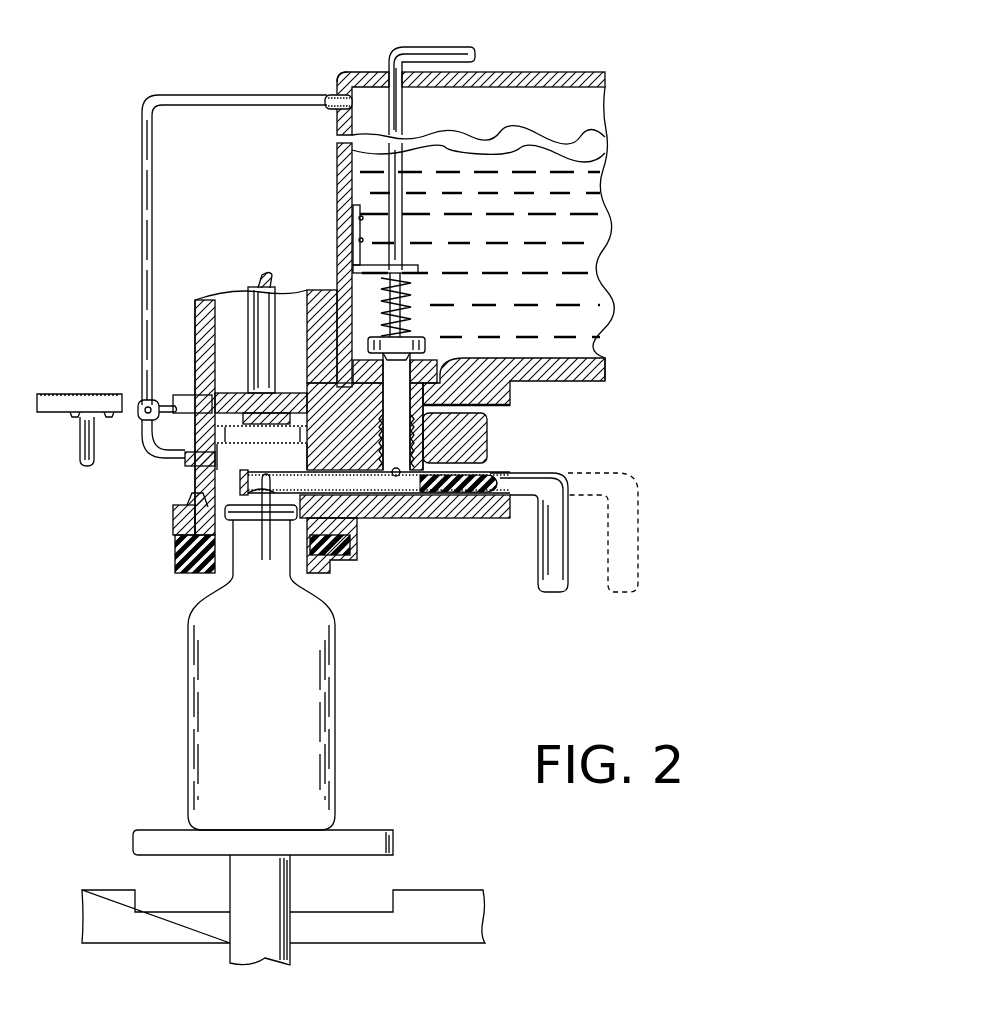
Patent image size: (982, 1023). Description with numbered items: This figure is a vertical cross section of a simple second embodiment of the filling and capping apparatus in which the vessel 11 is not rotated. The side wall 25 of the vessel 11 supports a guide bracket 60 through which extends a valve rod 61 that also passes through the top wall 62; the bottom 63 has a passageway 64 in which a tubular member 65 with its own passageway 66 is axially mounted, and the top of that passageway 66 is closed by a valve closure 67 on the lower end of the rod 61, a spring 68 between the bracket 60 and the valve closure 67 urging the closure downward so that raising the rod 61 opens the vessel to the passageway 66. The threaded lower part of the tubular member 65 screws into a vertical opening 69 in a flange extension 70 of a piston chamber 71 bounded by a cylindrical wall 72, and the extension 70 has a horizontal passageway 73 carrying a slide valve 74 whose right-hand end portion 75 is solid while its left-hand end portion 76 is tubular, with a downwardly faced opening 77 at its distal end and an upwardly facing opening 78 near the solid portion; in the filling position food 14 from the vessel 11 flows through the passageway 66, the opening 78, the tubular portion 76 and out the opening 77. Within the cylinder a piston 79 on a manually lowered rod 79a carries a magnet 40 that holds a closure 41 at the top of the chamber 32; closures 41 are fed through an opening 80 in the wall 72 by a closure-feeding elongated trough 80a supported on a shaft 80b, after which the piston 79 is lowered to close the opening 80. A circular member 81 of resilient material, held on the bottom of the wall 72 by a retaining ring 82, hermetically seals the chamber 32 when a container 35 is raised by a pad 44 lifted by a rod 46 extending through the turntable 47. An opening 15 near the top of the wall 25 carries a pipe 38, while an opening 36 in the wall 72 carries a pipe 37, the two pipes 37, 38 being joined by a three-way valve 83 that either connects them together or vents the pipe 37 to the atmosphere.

The vessel 11 is at (342, 68).
The food 14 is at (465, 142).
The opening 15 is at (350, 102).
The wall 25 is at (337, 178).
The chamber 32 is at (262, 457).
The container 35 is at (335, 680).
The opening 36 is at (215, 470).
The pipe 37 is at (148, 445).
The pipe 38 is at (158, 158).
The magnet 40 is at (280, 393).
The closure 41 is at (226, 448).
The pad 44 is at (355, 830).
The rod 46 is at (290, 905).
The turntable 47 is at (430, 890).
The guide bracket 60 is at (418, 266).
The valve rod 61 is at (404, 46).
The top wall 62 is at (505, 72).
The bottom 63 is at (524, 383).
The passageway 64 is at (440, 378).
The tubular member 65 is at (437, 350).
The passageway 66 is at (432, 435).
The valve closure 67 is at (415, 338).
The spring 68 is at (412, 280).
The vertical opening 69 is at (445, 452).
The flange extension 70 is at (425, 518).
The piston chamber 71 is at (197, 295).
The cylindrical wall 72 is at (195, 345).
The horizontal passageway 73 is at (460, 508).
The slide valve 74 is at (576, 470).
The right-hand end portion 75 is at (418, 516).
The left-hand end portion 76 is at (377, 522).
The opening 77 is at (270, 490).
The opening 78 is at (399, 482).
The piston 79 is at (240, 392).
The rod 79a is at (275, 345).
The opening 80 is at (198, 396).
The closure-feeding elongated trough 80a is at (173, 403).
The shaft 80b is at (82, 453).
The circular member 81 is at (178, 572).
The retaining ring 82 is at (173, 525).
The 3-way valve 83 is at (140, 424).